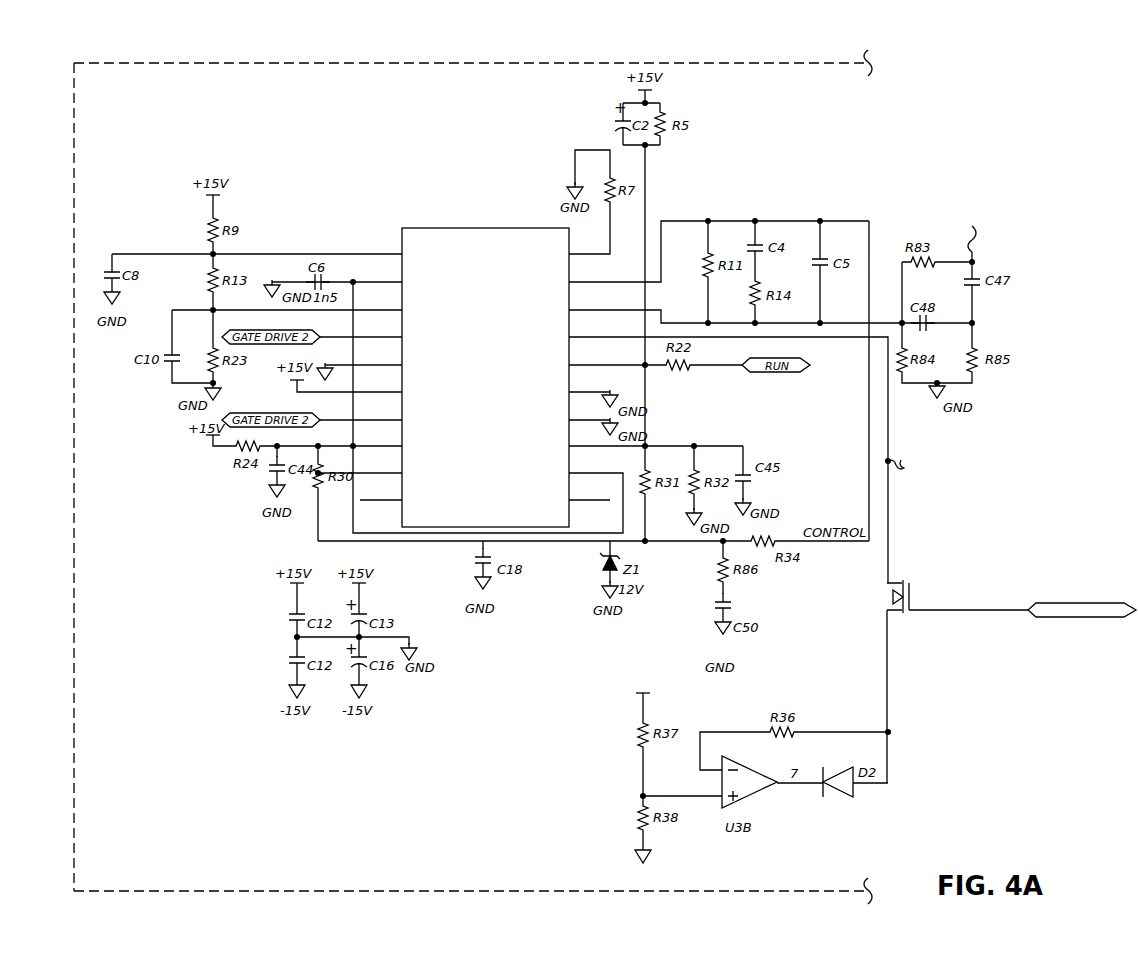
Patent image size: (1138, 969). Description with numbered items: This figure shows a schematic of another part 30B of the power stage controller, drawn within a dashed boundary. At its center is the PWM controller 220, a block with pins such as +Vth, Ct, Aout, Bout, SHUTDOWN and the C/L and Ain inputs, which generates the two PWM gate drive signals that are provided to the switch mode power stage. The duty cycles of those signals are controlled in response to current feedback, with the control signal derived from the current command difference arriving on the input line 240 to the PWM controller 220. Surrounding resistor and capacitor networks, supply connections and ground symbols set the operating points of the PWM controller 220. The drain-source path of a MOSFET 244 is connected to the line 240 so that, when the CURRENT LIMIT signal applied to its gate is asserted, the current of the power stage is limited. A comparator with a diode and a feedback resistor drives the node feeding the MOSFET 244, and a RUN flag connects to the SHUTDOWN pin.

The part of the controller 30B is at (693, 63).
The PWM controller 220 is at (466, 228).
The input line 240 is at (736, 402).
The MOSFET 244 is at (907, 628).